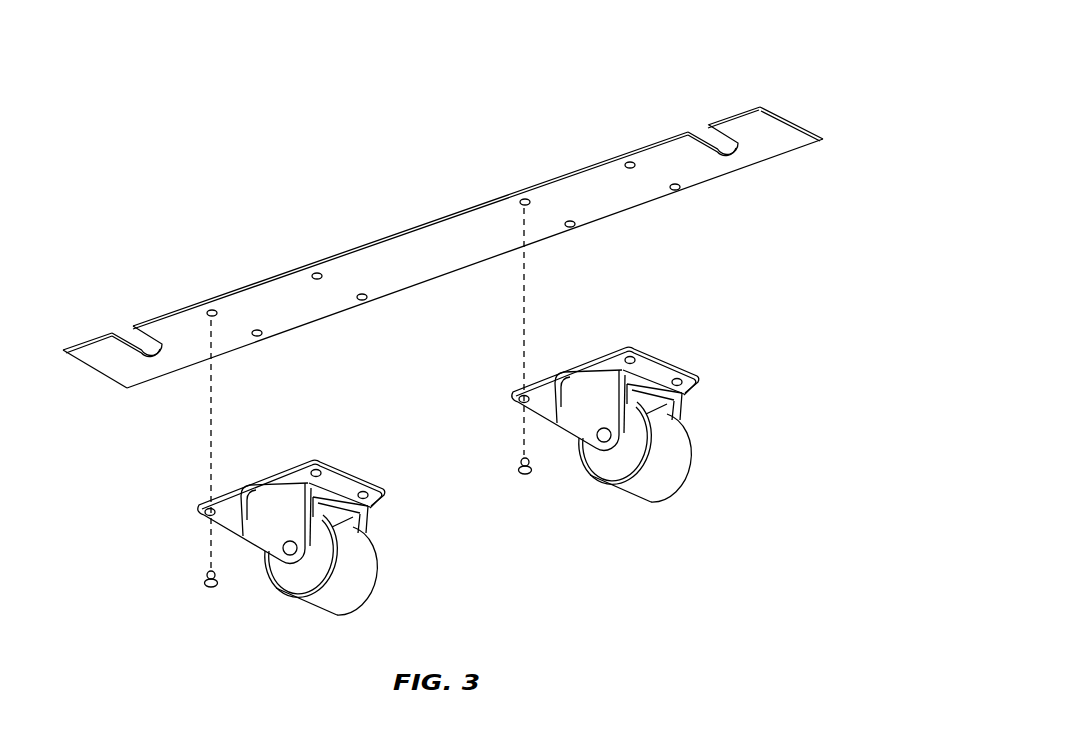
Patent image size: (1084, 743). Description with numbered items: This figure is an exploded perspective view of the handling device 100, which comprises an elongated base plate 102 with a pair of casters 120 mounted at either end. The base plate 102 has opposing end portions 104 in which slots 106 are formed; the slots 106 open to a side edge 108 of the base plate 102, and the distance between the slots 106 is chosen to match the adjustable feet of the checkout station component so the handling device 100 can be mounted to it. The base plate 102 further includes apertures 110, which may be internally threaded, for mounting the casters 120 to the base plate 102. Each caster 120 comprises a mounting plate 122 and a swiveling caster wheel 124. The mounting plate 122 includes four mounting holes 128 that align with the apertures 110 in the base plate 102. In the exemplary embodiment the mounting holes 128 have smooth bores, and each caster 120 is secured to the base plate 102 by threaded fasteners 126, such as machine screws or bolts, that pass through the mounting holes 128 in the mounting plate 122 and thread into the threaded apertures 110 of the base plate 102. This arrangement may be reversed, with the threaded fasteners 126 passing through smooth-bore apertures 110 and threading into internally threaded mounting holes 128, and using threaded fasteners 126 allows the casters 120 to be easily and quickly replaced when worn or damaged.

The handling device 100 is at (793, 270).
The base plate 102 is at (412, 260).
The end portion 104 is at (825, 110).
The slot 106 is at (130, 338).
The side edge 108 is at (475, 205).
The aperture 110 is at (310, 271).
The caster 120 is at (408, 571).
The mounting plate 122 is at (338, 483).
The swiveling caster wheel 124 is at (338, 603).
The threaded fastener 126 is at (207, 586).
The mounting hole 128 is at (198, 505).